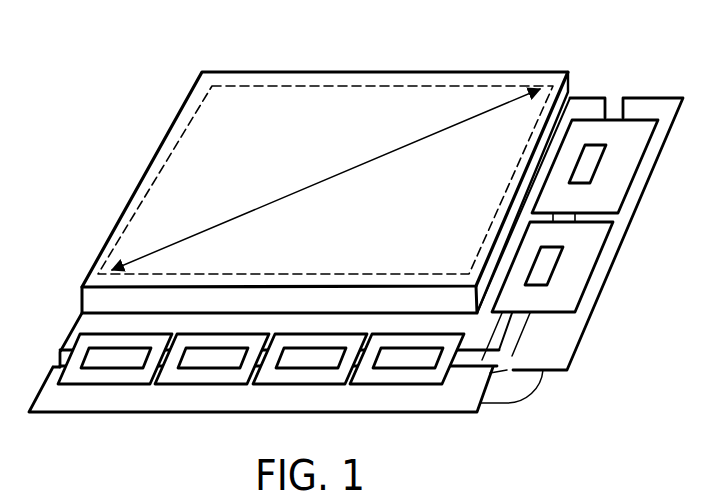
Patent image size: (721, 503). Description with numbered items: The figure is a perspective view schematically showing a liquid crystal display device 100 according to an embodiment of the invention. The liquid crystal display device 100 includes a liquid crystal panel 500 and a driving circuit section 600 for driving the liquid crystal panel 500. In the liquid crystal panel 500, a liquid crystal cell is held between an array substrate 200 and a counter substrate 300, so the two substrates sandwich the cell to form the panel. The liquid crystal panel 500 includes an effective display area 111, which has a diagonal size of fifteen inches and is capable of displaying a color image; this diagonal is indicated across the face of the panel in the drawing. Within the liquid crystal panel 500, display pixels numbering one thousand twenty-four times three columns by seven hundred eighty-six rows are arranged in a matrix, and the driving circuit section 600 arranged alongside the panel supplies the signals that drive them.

The liquid crystal display device 100 is at (356, 215).
The liquid crystal panel 500 is at (366, 86).
The counter substrate 300 is at (472, 80).
The effective display area 111 is at (326, 179).
The array substrate 200 is at (588, 103).
The driving circuit section 600 is at (560, 346).